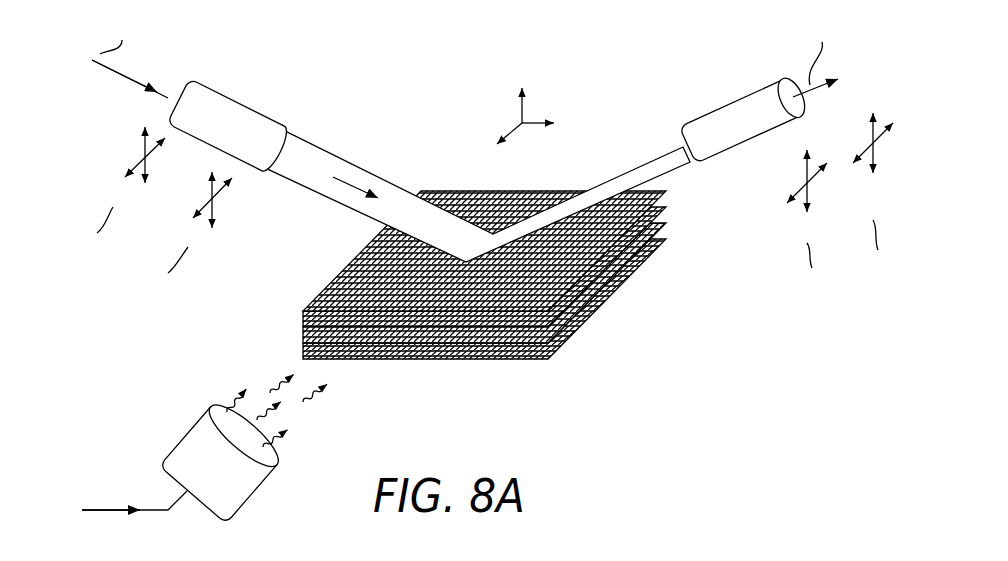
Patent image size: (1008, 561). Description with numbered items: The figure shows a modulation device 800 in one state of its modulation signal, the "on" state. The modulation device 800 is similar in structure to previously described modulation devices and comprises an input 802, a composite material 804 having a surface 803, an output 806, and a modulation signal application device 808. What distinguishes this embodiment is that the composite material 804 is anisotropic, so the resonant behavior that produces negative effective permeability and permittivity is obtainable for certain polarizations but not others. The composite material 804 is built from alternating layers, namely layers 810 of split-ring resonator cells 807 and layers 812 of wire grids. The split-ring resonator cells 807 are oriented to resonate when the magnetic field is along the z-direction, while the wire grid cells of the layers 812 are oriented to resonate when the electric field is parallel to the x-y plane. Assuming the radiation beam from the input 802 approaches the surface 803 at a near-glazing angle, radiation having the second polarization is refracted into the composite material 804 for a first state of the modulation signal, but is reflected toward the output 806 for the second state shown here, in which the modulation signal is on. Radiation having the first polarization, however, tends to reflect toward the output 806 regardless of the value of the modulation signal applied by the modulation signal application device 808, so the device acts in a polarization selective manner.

The modulation device 800 is at (700, 435).
The input 802 is at (225, 103).
The surface 803 is at (617, 247).
The composite material 804 is at (680, 189).
The output 806 is at (742, 105).
The split-ring resonator cells 807 is at (347, 267).
The modulation signal application device 808 is at (197, 440).
The layers of split-ring resonator cells 810 is at (303, 311).
The layers of wire grids 812 is at (303, 327).